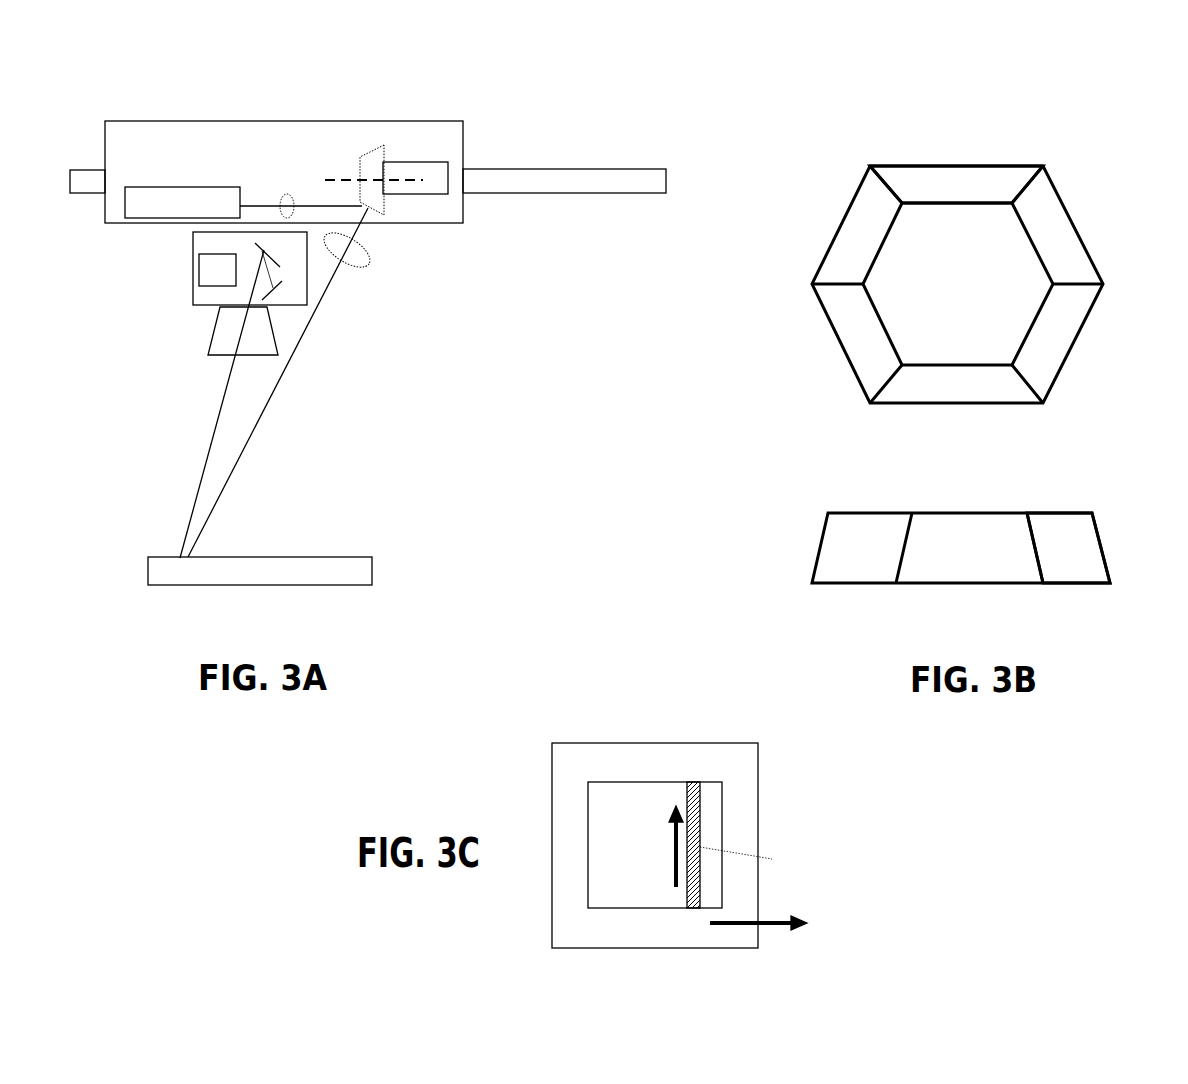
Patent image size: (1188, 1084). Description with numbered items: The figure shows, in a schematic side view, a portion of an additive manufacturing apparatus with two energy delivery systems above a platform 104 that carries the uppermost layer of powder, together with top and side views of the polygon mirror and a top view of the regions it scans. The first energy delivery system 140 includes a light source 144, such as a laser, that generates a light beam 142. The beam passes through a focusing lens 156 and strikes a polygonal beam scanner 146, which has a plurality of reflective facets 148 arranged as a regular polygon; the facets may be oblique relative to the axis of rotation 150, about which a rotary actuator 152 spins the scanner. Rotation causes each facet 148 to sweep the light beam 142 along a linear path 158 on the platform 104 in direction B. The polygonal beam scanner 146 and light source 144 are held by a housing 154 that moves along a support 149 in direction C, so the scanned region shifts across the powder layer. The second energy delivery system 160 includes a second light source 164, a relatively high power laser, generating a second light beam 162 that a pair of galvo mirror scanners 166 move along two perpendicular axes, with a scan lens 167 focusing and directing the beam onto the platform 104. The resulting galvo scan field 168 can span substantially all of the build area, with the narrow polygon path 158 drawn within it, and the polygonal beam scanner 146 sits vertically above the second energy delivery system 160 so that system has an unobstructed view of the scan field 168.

In FIG. 3A, the platform 104 is at (283, 570).
In FIG. 3C, the platform 104 is at (587, 742).
In FIG. 3A, the first energy delivery system 140 is at (485, 83).
In FIG. 3A, the light beam 142 is at (277, 385).
In FIG. 3A, the light source 144 is at (160, 200).
In FIG. 3A, the polygonal beam scanner 146 is at (380, 153).
In FIG. 3B, the polygonal beam scanner 146 is at (943, 98).
In FIG. 3B, the reflective facets 148 is at (967, 185).
In FIG. 3A, the support 149 is at (540, 177).
In FIG. 3A, the axis of rotation 150 is at (327, 180).
In FIG. 3A, the rotary actuator 152 is at (425, 165).
In FIG. 3A, the housing 154 is at (139, 122).
In FIG. 3A, the focusing lens 156 is at (281, 193).
In FIG. 3A, the path 158 is at (372, 262).
In FIG. 3C, the path 158 is at (692, 807).
In FIG. 3A, the second energy delivery system 160 is at (171, 287).
In FIG. 3A, the second light beam 162 is at (205, 465).
In FIG. 3A, the second light source 164 is at (213, 275).
In FIG. 3A, the galvo mirror scanners 166 is at (236, 264).
In FIG. 3A, the scan lens 167 is at (223, 357).
In FIG. 3C, the scan field 168 is at (638, 782).